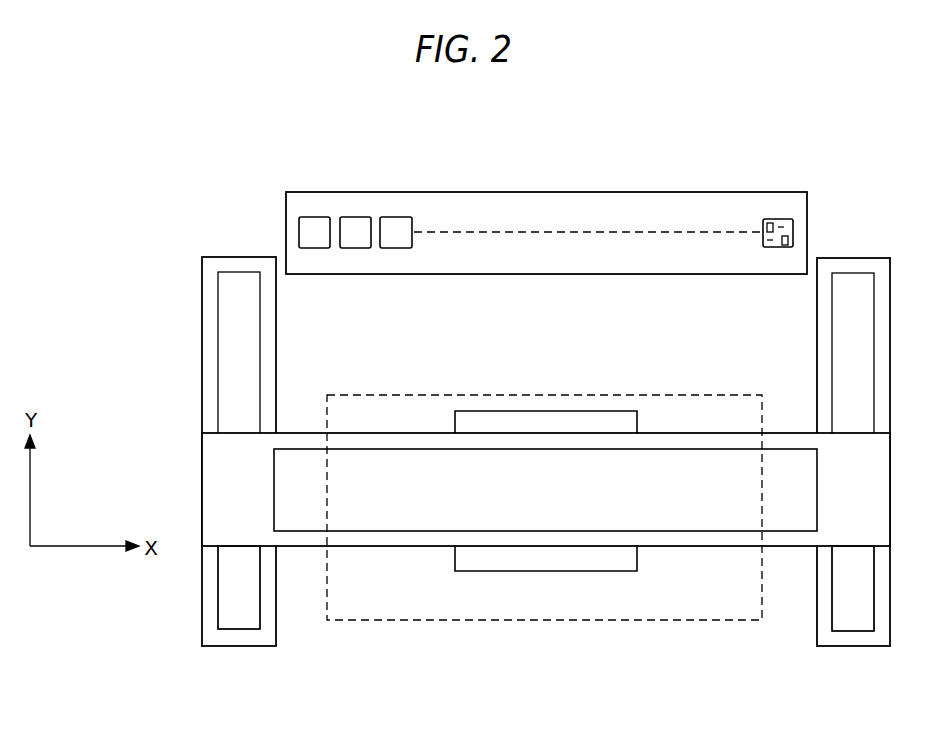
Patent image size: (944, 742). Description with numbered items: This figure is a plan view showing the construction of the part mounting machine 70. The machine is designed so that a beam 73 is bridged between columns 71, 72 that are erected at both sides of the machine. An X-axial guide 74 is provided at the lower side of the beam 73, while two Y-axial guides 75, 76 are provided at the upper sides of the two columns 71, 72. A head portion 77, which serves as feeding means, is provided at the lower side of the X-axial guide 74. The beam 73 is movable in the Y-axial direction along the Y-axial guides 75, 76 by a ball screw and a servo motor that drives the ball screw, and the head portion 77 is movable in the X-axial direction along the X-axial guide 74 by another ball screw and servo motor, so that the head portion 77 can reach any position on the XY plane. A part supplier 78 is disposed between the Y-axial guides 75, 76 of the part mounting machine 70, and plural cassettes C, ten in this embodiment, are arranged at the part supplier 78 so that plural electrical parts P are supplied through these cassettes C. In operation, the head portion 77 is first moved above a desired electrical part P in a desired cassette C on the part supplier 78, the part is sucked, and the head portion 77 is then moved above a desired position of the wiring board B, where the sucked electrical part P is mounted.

The part mounting machine 70 is at (590, 214).
The column 71 is at (238, 257).
The column 72 is at (854, 258).
The beam 73 is at (202, 490).
The X-axial guide 74 is at (284, 449).
The Y-axial guide 75 is at (238, 630).
The Y-axial guide 76 is at (853, 632).
The head portion 77 is at (547, 411).
The part supplier 78 is at (641, 266).
The cassette C is at (315, 217).
The electrical part P is at (812, 168).
The wiring board B is at (544, 507).